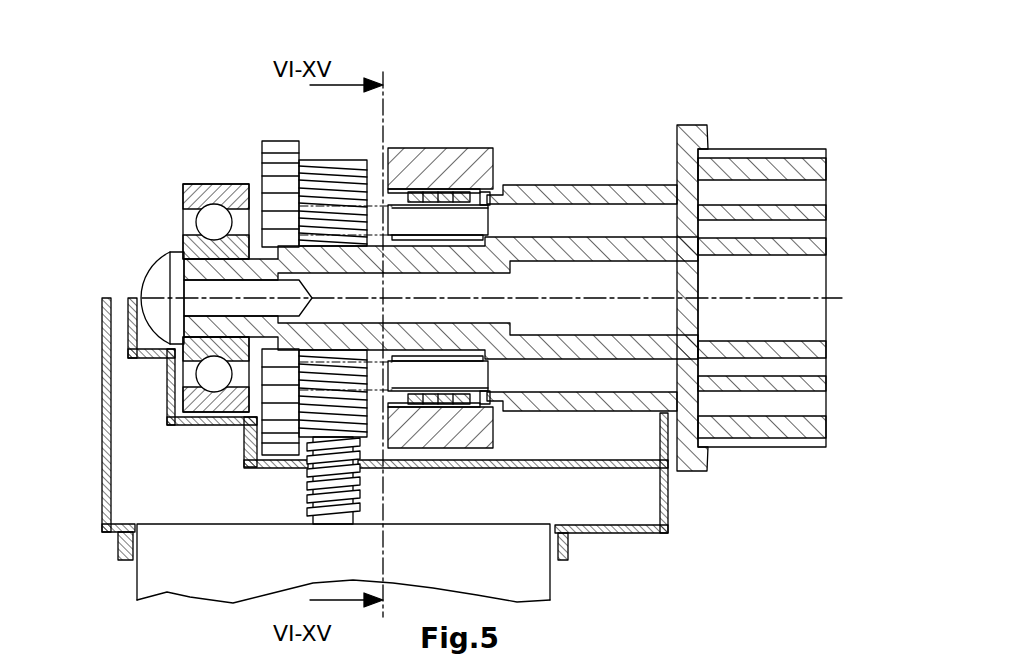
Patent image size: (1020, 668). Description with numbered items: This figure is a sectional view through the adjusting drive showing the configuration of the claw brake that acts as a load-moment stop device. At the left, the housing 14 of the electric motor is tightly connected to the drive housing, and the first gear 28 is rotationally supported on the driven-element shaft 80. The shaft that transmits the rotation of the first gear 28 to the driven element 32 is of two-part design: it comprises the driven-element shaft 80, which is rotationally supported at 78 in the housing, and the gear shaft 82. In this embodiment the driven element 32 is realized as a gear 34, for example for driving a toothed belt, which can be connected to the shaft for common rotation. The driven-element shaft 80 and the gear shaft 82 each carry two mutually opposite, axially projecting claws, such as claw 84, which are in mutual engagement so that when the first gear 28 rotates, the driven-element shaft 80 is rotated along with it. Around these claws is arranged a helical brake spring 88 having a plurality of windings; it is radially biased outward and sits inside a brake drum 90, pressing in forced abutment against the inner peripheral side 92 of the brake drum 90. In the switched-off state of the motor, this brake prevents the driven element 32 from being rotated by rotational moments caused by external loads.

The housing 14 is at (192, 558).
The first gear 28 is at (325, 175).
The driven element 32 is at (640, 116).
The gear 34 is at (793, 168).
The rotational support 78 is at (187, 250).
The driven-element shaft 80 is at (497, 257).
The gear shaft 82 is at (378, 217).
The claw 84 is at (403, 227).
The helical brake spring 88 is at (428, 195).
The brake drum 90 is at (450, 165).
The inner peripheral side 92 is at (482, 207).